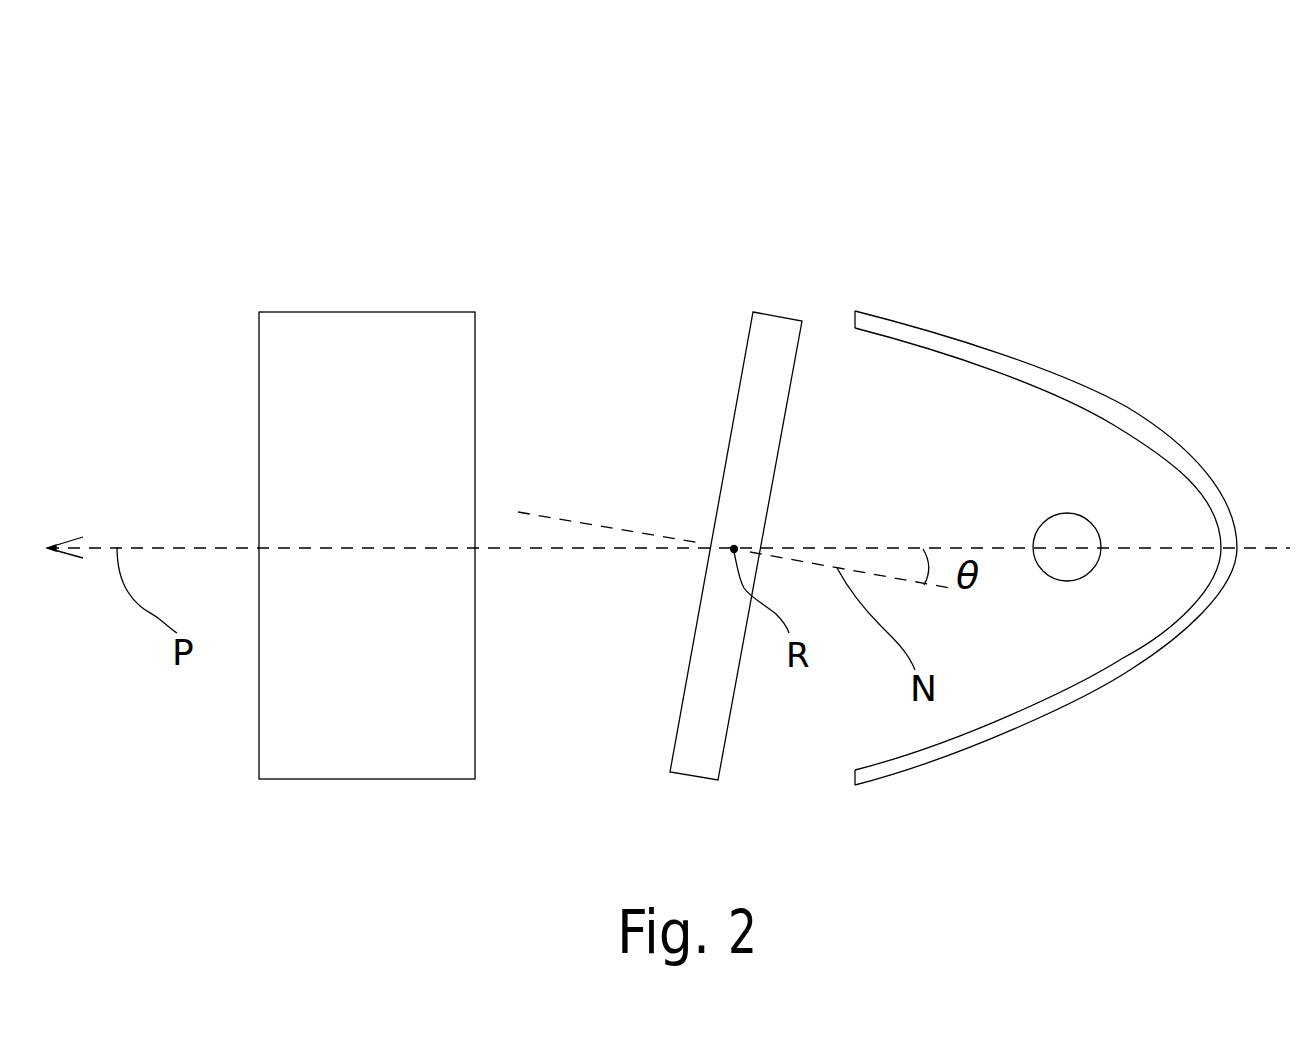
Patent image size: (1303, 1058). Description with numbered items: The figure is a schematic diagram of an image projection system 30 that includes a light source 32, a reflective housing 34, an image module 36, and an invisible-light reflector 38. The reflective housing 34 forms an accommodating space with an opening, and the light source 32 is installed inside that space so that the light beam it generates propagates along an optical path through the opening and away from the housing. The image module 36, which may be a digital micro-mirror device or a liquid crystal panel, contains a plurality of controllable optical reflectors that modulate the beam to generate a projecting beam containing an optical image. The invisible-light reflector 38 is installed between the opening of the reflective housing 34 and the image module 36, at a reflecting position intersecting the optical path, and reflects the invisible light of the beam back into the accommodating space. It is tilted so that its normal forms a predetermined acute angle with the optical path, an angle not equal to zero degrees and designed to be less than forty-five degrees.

The image projection system 30 is at (103, 165).
The light source 32 is at (1069, 581).
The reflective housing 34 is at (1125, 424).
The image module 36 is at (390, 510).
The invisible-light reflector 38 is at (702, 779).